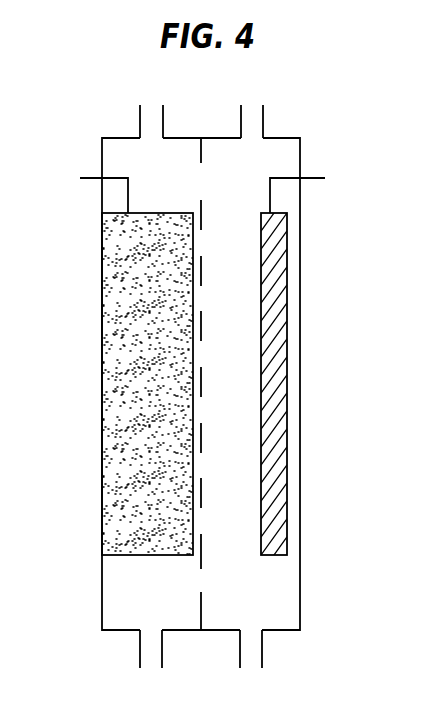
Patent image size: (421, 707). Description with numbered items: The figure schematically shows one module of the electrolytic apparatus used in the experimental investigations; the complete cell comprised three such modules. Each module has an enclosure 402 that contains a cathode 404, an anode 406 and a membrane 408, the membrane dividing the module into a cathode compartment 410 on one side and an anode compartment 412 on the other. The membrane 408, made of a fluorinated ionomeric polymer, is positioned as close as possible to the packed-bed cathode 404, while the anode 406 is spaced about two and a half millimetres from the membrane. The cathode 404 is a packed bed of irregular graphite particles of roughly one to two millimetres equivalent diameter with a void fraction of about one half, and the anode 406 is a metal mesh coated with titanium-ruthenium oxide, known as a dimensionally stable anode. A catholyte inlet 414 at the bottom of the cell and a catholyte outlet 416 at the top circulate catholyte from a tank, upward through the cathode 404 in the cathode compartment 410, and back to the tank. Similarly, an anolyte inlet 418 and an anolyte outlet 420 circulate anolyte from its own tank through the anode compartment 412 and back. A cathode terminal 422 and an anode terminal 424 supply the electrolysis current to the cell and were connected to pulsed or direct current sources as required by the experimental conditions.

The enclosure 402 is at (122, 592).
The cathode 404 is at (123, 312).
The anode 406 is at (283, 328).
The membrane 408 is at (228, 207).
The cathode compartment 410 is at (173, 602).
The anode compartment 412 is at (264, 602).
The catholyte inlet 414 is at (138, 658).
The catholyte outlet 416 is at (139, 125).
The anolyte inlet 418 is at (264, 659).
The anolyte outlet 420 is at (265, 125).
The cathode terminal 422 is at (93, 180).
The anode terminal 424 is at (307, 180).